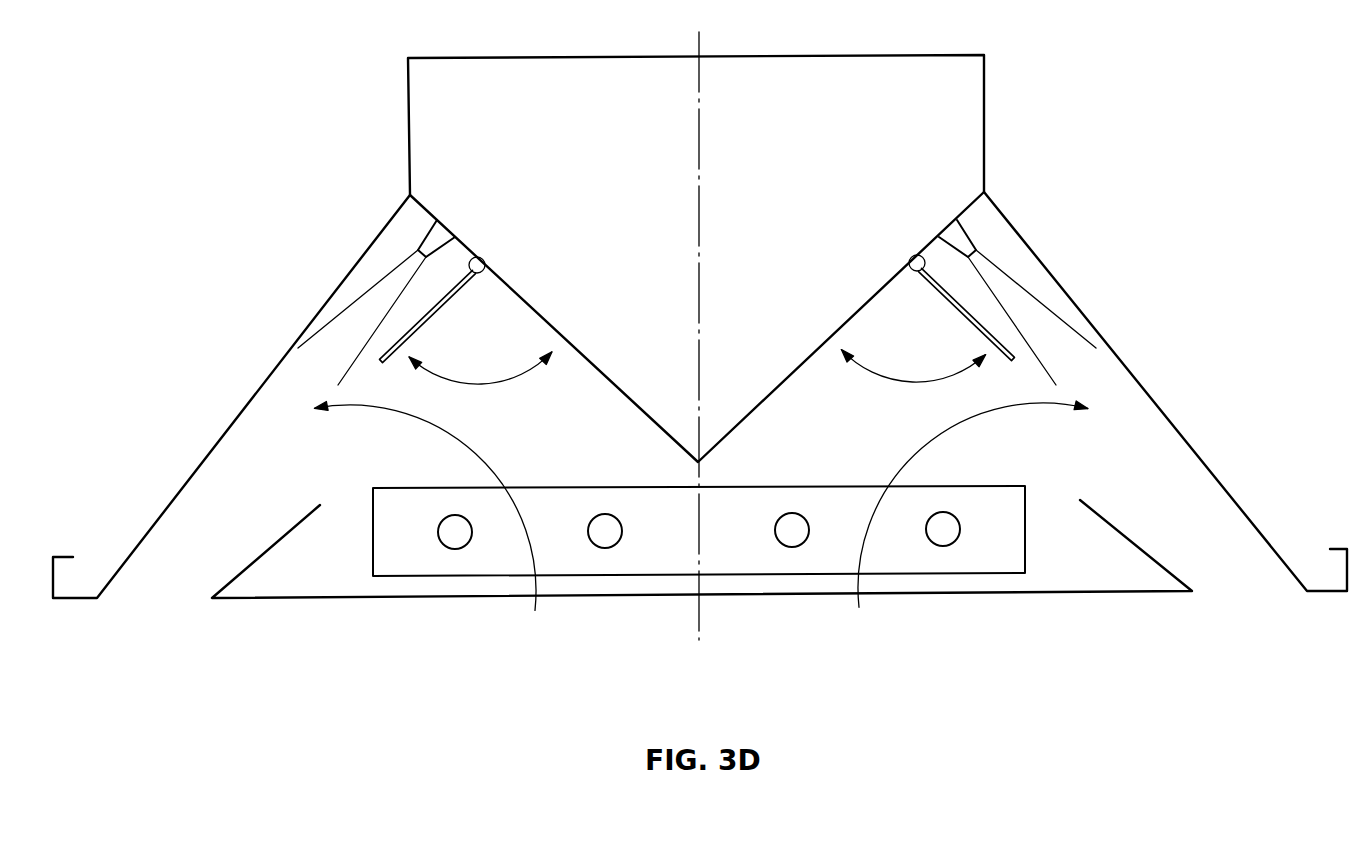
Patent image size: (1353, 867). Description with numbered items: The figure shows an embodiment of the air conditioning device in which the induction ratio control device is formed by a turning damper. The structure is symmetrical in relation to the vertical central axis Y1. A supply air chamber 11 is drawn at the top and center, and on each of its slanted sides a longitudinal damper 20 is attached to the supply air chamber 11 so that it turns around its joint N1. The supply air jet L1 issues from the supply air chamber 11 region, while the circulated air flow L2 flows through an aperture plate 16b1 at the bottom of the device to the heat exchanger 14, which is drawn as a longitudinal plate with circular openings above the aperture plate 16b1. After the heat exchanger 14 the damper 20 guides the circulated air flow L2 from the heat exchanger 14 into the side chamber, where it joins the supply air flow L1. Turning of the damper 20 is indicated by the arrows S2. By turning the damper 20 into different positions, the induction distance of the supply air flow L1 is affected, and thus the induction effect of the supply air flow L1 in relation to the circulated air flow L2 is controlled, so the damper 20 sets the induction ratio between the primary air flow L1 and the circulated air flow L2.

The supply air chamber 11 is at (585, 310).
The vertical central axis Y1 is at (700, 43).
The joint N1 is at (484, 270).
The damper 20 is at (432, 313).
The supply air flow L1 is at (347, 337).
The turning arrows S2 is at (480, 385).
The circulated air flow L2 is at (390, 402).
The heat exchanger 14 is at (493, 497).
The aperture plate 16b1 is at (788, 597).